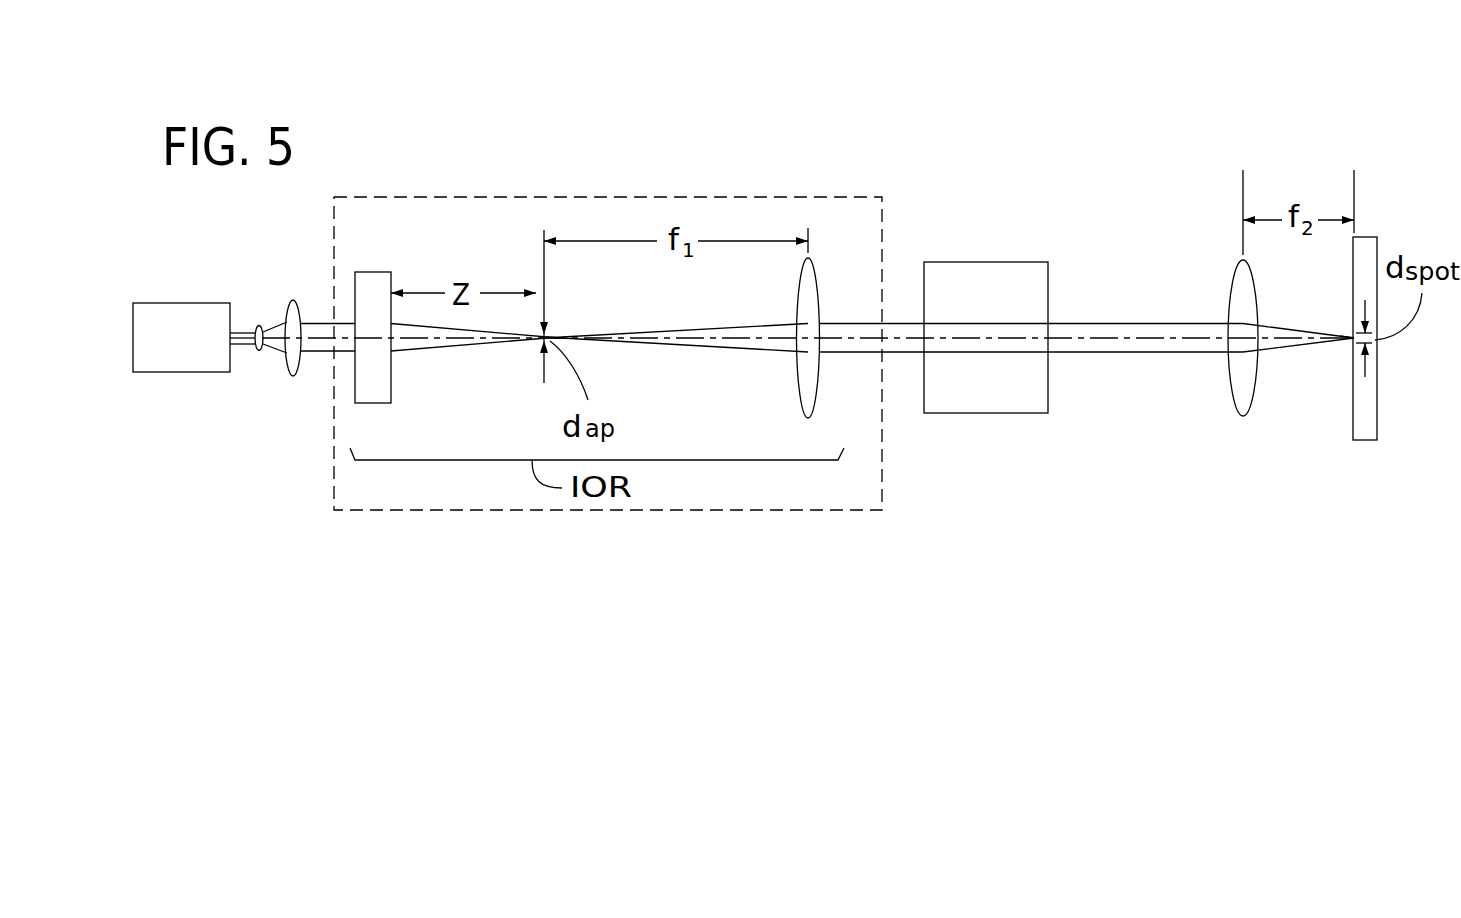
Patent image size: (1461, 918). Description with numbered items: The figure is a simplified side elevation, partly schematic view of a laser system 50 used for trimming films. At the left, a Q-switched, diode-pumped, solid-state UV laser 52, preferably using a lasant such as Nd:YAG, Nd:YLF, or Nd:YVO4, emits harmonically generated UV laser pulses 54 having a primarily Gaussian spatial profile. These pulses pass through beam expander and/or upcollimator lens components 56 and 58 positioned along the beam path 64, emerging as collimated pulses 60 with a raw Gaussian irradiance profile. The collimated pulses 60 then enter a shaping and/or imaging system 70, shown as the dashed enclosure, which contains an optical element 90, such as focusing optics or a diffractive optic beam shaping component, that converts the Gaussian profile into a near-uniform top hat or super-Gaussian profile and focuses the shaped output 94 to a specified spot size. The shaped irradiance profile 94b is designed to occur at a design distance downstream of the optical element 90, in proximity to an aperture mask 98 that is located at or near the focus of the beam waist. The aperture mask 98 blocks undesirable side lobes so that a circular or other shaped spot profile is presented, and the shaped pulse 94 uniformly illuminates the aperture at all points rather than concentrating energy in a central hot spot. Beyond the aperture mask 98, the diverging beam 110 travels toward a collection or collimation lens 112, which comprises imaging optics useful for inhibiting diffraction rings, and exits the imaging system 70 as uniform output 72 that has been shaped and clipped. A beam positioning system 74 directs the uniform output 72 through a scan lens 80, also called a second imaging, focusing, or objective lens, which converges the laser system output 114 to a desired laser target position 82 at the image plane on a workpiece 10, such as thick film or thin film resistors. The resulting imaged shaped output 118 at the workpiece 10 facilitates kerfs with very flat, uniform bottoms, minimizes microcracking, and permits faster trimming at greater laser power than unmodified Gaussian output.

The workpiece 10 is at (1372, 238).
The laser system 50 is at (843, 127).
The UV laser 52 is at (183, 303).
The UV laser pulses 54 is at (246, 331).
The beam expander lens component 56 is at (257, 326).
The upcollimator lens component 58 is at (291, 300).
The collimated pulses 60 is at (320, 358).
The beam path 64 is at (440, 341).
The shaping and/or imaging system 70 is at (505, 197).
The uniform output 72 is at (903, 322).
The beam positioning system 74 is at (957, 262).
The scan lens 80 is at (1243, 260).
The laser target position 82 is at (1352, 340).
The optical element 90 is at (372, 272).
The shaped output 94 is at (415, 353).
The shaped irradiance profile 94b is at (544, 346).
The aperture mask 98 is at (546, 298).
The diverging beam 110 is at (763, 323).
The collimation lens 112 is at (812, 258).
The laser system output 114 is at (1268, 324).
The imaged shaped output 118 is at (1352, 342).